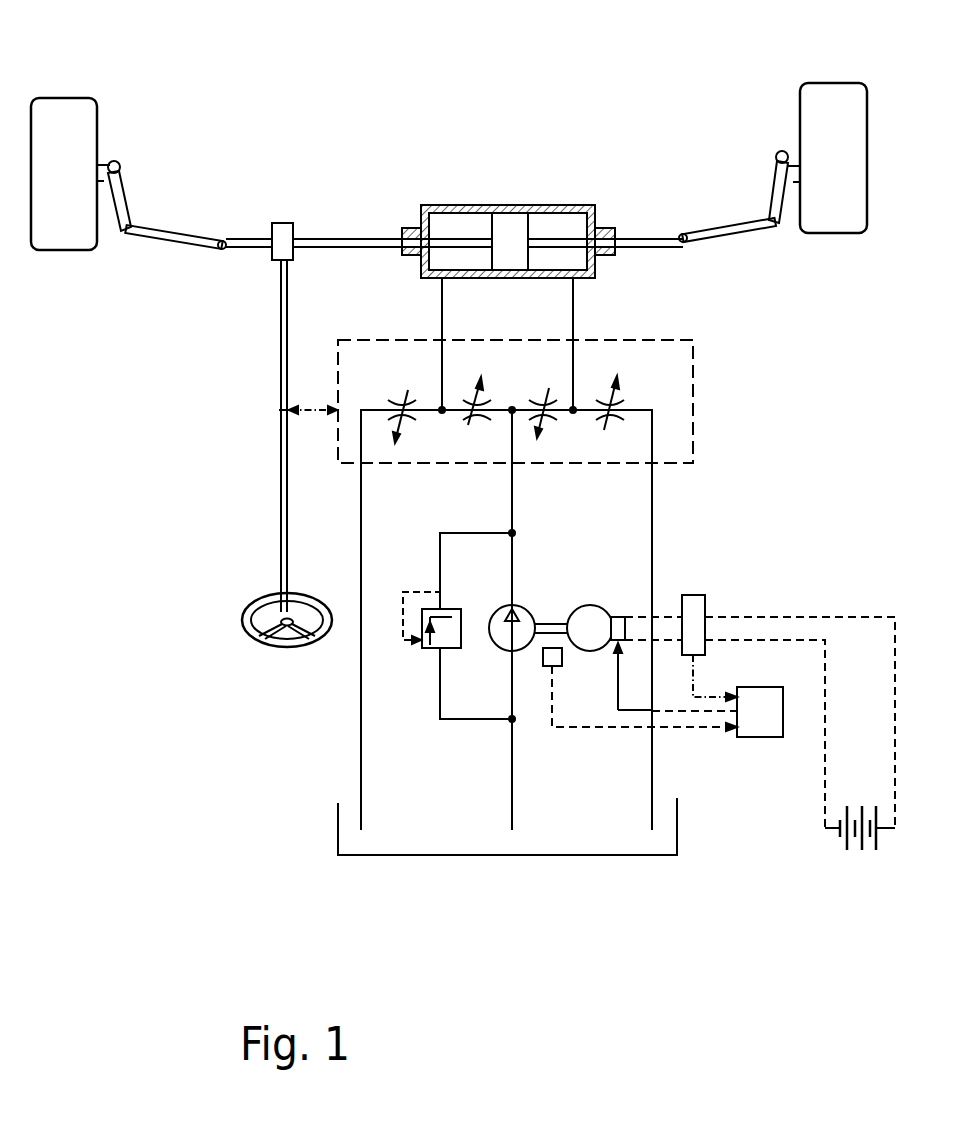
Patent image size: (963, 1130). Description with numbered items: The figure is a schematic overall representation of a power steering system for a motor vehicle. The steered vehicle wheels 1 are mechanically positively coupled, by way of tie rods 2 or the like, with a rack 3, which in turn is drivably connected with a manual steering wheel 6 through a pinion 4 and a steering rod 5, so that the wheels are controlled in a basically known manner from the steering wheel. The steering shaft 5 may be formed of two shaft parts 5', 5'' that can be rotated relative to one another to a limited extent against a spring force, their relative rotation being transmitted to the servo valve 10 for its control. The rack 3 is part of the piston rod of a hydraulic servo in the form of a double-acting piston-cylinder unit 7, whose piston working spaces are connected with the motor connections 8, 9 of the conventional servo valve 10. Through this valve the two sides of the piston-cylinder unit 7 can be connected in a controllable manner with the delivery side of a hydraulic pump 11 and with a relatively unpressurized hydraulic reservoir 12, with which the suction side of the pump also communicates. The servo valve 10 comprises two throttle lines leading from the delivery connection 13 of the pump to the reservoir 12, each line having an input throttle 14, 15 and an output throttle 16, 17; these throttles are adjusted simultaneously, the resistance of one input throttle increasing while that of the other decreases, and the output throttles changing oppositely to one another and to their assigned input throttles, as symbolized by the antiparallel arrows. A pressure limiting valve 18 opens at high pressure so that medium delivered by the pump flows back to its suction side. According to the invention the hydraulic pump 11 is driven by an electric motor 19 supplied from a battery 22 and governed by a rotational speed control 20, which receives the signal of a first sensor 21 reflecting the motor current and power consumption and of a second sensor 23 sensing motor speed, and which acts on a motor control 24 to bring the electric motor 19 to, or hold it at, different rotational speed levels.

The steered vehicle wheels 1 is at (61, 103).
The steering linkage / tie rods 2 is at (180, 229).
The rack 3 is at (352, 238).
The pinion 4 is at (281, 222).
The steering rod 5 is at (262, 436).
The shaft part 5' is at (249, 314).
The shaft part 5'' is at (252, 498).
The manual steering wheel 6 is at (243, 612).
The double-acting piston-cylinder unit 7 is at (467, 204).
The motor connection 8 is at (441, 302).
The motor connection 9 is at (574, 310).
The servo valve 10 is at (666, 397).
The hydraulic pump 11 is at (526, 612).
The hydraulic reservoir 12 is at (553, 856).
The delivery connection 13 is at (514, 492).
The input throttle 14 is at (469, 421).
The input throttle 15 is at (545, 425).
The output throttle 16 is at (400, 396).
The output throttle 17 is at (630, 398).
The pressure limiting valve 18 is at (461, 625).
The electric motor 19 is at (590, 605).
The rotational speed control 20 is at (776, 729).
The first sensor 21 is at (706, 600).
The battery 22 is at (857, 855).
The second sensor 23 is at (561, 657).
The motor control 24 is at (612, 617).